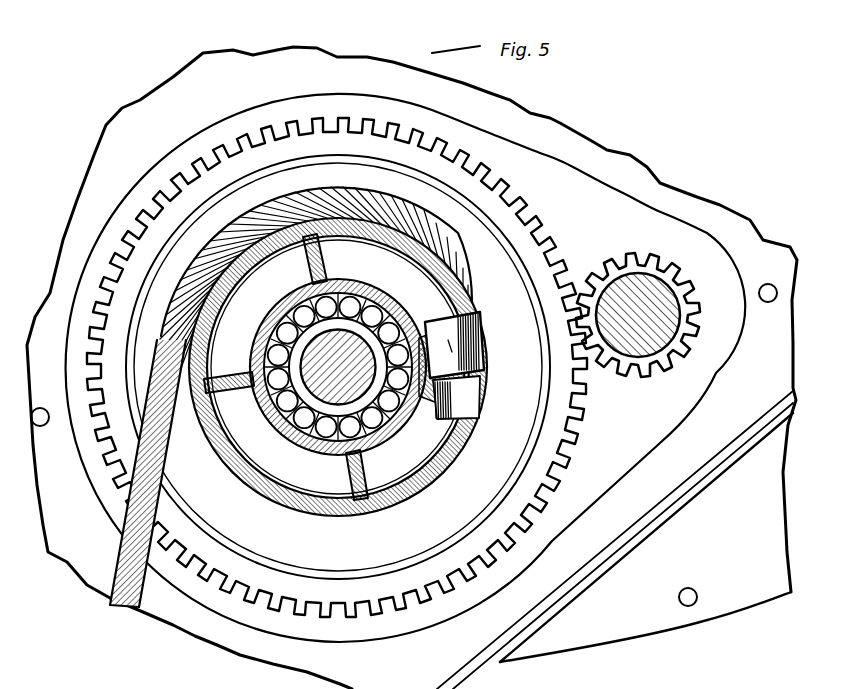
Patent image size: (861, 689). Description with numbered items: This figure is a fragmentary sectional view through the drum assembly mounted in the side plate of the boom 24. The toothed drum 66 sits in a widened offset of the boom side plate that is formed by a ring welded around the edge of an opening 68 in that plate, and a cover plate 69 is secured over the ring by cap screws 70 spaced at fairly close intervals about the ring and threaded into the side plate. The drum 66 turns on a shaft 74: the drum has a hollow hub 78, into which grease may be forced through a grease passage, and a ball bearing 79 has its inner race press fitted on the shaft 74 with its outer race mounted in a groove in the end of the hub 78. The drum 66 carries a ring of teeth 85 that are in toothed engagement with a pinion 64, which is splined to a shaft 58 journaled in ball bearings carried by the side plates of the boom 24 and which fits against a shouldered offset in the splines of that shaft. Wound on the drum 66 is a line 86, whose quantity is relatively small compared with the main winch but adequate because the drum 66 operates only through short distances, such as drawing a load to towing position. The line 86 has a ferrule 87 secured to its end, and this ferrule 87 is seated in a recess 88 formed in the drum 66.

The boom 24 is at (165, 80).
The shaft 58 is at (656, 298).
The pinion 64 is at (650, 263).
The toothed drum 66 is at (268, 489).
The opening 68 is at (742, 323).
The cover plate 69 is at (742, 608).
The cap screws 70 is at (44, 426).
The shaft 74 is at (346, 340).
The hollow hub 78 is at (276, 311).
The ball bearing 79 is at (298, 302).
The ring of teeth 85 is at (362, 616).
The line 86 is at (447, 290).
The ferrule 87 is at (470, 362).
The recess 88 is at (468, 397).